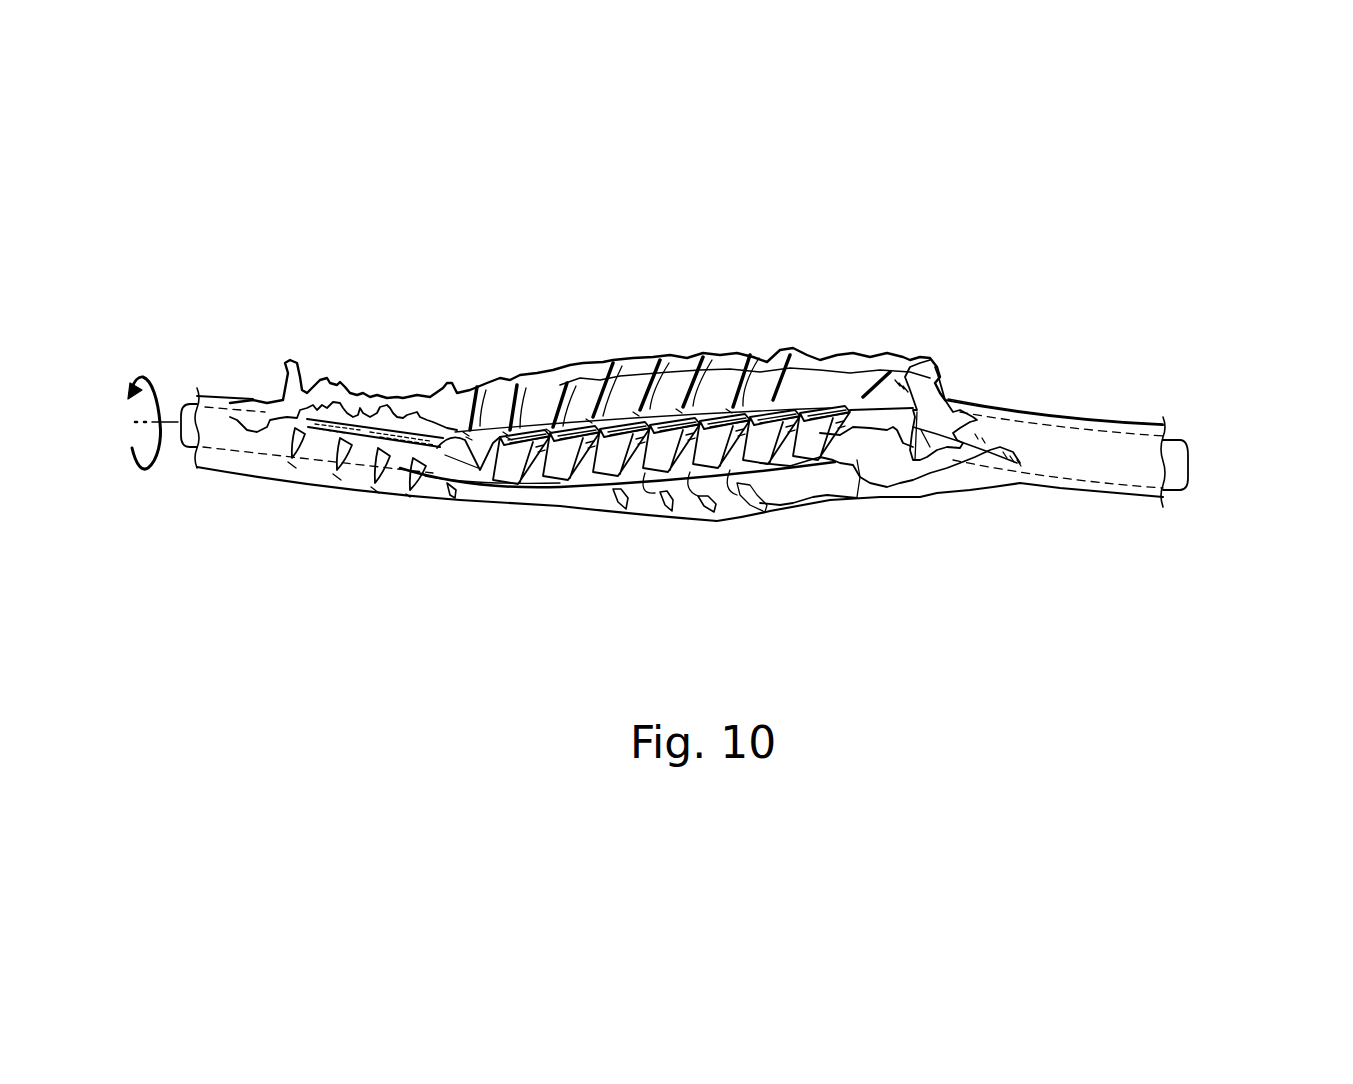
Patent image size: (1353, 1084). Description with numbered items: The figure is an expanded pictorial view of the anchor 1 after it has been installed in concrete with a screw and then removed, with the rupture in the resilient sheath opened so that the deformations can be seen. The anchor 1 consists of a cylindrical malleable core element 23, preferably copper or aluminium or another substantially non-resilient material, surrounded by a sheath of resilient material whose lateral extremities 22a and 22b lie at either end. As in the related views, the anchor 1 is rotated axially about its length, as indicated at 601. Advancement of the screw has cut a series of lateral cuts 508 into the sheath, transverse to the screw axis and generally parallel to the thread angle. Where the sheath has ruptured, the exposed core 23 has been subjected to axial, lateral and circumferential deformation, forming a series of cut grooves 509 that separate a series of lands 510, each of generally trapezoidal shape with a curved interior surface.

The anchor 1 is at (1043, 397).
The lateral extremity of resilient sheath 22a is at (1147, 423).
The lateral extremity of resilient sheath 22b is at (702, 355).
The malleable core element 23 is at (1190, 465).
The lateral cuts 508 is at (657, 360).
The cut grooves 509 is at (677, 478).
The lands 510 is at (627, 513).
The axial rotation of anchor 601 is at (148, 407).